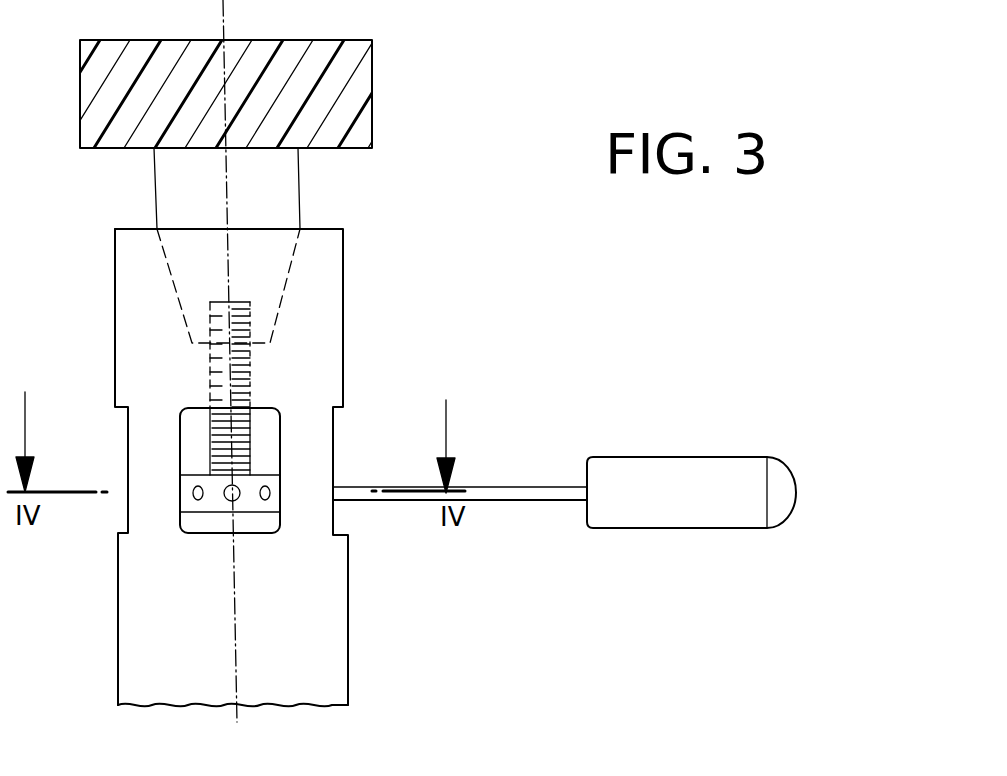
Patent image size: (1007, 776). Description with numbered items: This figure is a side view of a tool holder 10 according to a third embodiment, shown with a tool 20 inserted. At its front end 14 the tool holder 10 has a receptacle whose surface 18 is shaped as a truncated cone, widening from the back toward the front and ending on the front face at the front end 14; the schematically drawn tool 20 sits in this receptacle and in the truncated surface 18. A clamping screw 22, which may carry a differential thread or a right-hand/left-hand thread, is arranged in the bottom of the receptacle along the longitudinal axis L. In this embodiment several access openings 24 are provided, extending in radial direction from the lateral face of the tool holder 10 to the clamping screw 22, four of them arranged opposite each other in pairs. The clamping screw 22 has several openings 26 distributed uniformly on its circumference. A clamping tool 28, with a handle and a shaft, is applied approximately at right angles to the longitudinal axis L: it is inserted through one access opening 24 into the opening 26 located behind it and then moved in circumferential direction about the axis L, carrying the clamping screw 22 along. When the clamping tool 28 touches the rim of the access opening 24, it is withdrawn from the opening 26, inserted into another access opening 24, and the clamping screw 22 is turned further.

The tool holder 10 is at (354, 627).
The front end 14 is at (124, 241).
The truncated cone surface 18 is at (285, 258).
The tool 20 is at (352, 84).
The clamping screw 22 is at (250, 452).
The access opening 24 is at (192, 428).
The opening 26 is at (210, 500).
The clamping tool 28 is at (518, 487).
The longitudinal axis L is at (240, 684).